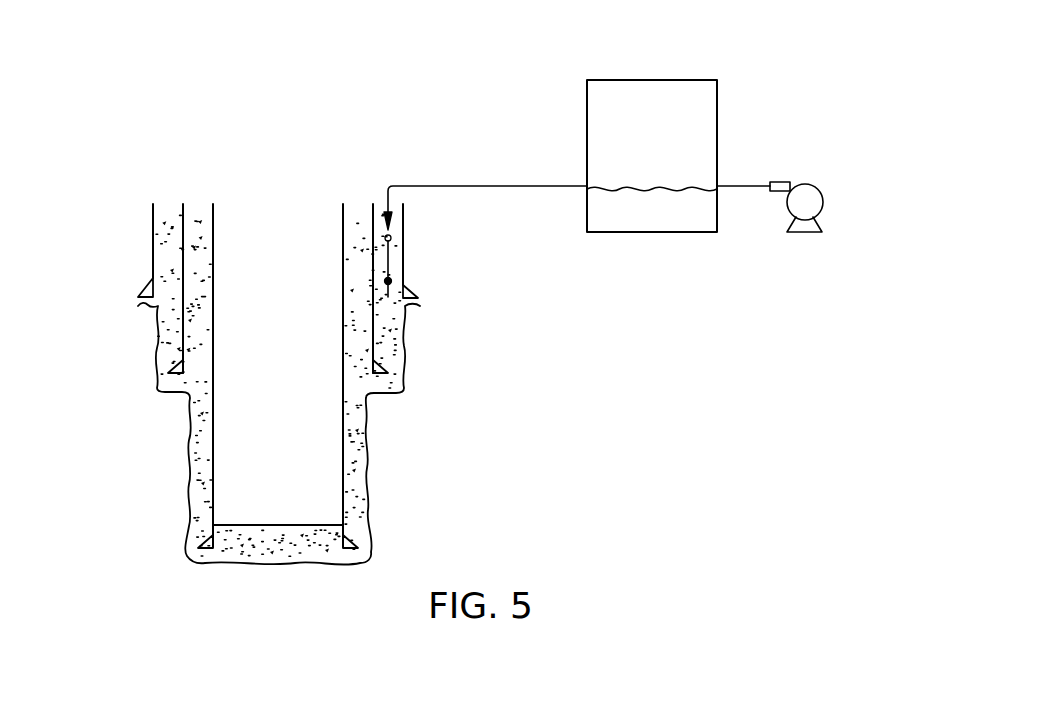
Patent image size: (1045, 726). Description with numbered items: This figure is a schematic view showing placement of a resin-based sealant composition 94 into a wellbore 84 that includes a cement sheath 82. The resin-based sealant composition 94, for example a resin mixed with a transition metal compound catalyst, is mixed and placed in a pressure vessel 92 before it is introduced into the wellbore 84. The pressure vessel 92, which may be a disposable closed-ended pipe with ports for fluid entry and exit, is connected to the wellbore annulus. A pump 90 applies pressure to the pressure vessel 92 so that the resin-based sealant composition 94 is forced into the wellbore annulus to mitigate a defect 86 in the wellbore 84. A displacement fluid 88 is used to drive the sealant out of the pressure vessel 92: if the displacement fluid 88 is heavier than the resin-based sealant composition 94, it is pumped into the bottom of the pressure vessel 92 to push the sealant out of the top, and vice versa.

The cement sheath 82 is at (353, 437).
The wellbore 84 is at (274, 220).
The defect 86 is at (394, 303).
The displacement fluid 88 is at (658, 202).
The pump 90 is at (803, 212).
The pressure vessel 92 is at (653, 80).
The resin-based sealant composition 94 is at (697, 140).